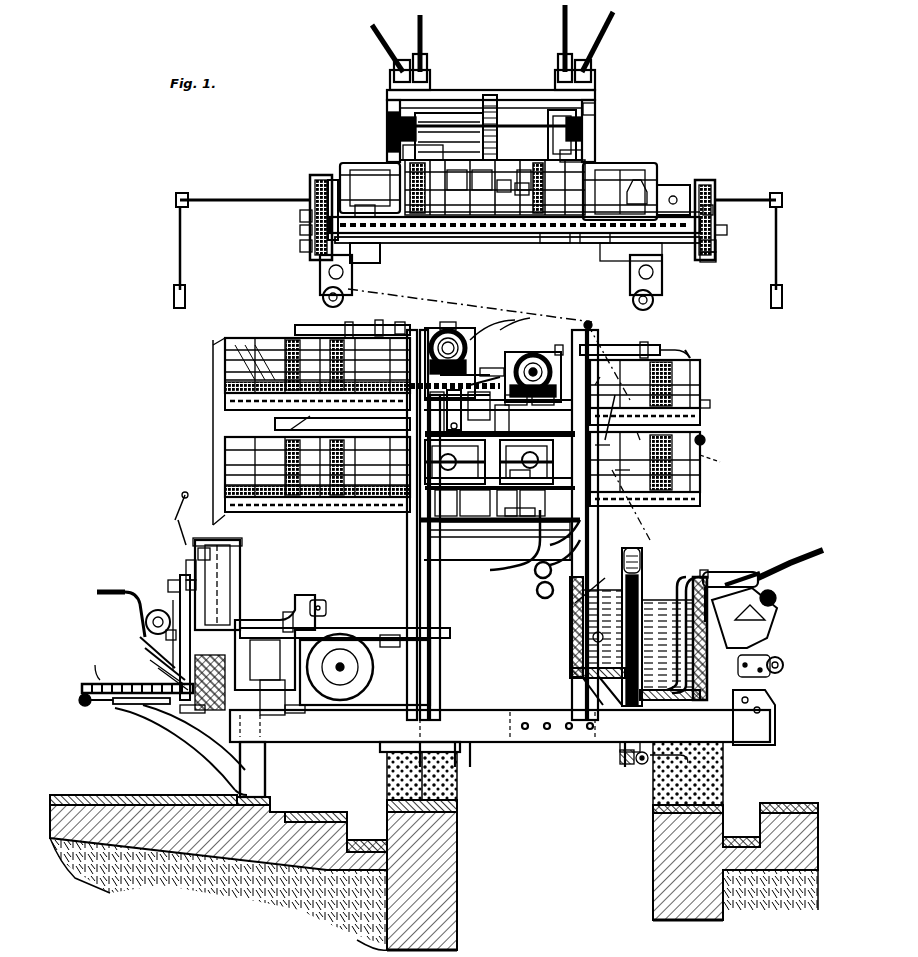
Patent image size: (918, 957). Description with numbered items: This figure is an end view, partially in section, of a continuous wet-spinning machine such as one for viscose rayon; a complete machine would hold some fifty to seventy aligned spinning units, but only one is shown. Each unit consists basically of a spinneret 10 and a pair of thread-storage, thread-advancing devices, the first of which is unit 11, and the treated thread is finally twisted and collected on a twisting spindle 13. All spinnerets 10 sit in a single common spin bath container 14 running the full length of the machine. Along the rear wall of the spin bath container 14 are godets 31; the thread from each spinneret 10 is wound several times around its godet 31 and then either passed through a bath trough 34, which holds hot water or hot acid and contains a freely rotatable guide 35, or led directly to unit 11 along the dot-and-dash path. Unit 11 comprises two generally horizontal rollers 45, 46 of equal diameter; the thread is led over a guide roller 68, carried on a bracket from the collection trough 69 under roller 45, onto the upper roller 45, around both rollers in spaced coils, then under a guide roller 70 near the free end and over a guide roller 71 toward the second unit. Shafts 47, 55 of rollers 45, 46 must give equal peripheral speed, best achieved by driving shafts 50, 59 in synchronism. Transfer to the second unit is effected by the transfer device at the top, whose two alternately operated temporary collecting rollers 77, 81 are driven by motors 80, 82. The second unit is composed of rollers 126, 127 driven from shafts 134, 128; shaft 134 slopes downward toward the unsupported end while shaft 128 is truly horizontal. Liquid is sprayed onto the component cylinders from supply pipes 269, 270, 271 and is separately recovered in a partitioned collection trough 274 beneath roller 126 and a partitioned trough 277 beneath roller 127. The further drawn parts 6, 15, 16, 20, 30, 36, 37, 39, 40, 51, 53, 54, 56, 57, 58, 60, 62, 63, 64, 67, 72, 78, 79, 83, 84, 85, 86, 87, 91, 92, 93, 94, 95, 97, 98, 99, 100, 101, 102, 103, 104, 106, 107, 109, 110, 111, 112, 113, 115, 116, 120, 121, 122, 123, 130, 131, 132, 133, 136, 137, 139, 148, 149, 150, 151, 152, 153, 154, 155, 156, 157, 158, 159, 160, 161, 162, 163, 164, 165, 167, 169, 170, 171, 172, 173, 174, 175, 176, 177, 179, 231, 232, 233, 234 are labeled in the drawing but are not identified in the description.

The rail bracket 6 is at (300, 230).
The spinneret 10 is at (665, 670).
The thread-storage, thread-advancing unit 11 is at (700, 368).
The twisting spindle 13 is at (178, 530).
The spin bath container 14 is at (745, 745).
The bracket 15 is at (772, 630).
The cylinder 16 is at (730, 572).
The roller bracket 20 is at (780, 672).
The roller 30 is at (640, 764).
The godet 31 is at (642, 560).
The bath trough 34 is at (593, 584).
The freely rotatable guide 35 is at (597, 637).
The bracket 36 is at (620, 748).
The bearing 37 is at (622, 764).
The support 39 is at (675, 763).
The box 40 is at (532, 502).
The upper roller 45 is at (700, 410).
The roller 46 is at (700, 478).
The shaft 47 is at (520, 473).
The shaft 50 is at (526, 462).
The bar 51 is at (520, 510).
The box 53 is at (507, 502).
The lever 54 is at (461, 400).
The shaft 55 is at (496, 364).
The block 56 is at (543, 398).
The block 57 is at (516, 398).
The arm 58 is at (486, 377).
The shaft 59 is at (533, 363).
The stop 60 is at (568, 350).
The gear housing 62 is at (525, 355).
The shaft 63 is at (540, 360).
The link 64 is at (612, 445).
The link 67 is at (604, 375).
The guide roller 68 is at (617, 409).
The collection trough 69 is at (710, 404).
The guide roller 70 is at (717, 457).
The guide roller 71 is at (592, 322).
The conveyor band 72 is at (700, 500).
The temporary collecting roller 77 is at (653, 300).
The post 78 is at (400, 322).
The knob 79 is at (705, 440).
The motor 80 is at (662, 280).
The temporary collecting roller 81 is at (323, 297).
The motor 82 is at (352, 280).
The bracket 83 is at (590, 243).
The rail beam 84 is at (448, 233).
The bracket 85 is at (713, 212).
The bearing block 86 is at (680, 185).
The hanger 87 is at (380, 253).
The bracket 91 is at (375, 240).
The lower bar 92 is at (500, 243).
The motor 93 is at (370, 188).
The plate 94 is at (332, 180).
The right plate 95 is at (715, 225).
The bracket 97 is at (300, 215).
The bracket 98 is at (300, 246).
The left plate 99 is at (310, 185).
The bracket 100 is at (716, 246).
The bracket 101 is at (716, 258).
The base 102 is at (403, 150).
The motor 103 is at (430, 113).
The bearing 104 is at (400, 132).
The end plate 106 is at (388, 125).
The bracket 107 is at (595, 110).
The member 109 is at (457, 177).
The member 110 is at (487, 178).
The rack 111 is at (490, 95).
The pulley 112 is at (565, 104).
The bracket 113 is at (582, 156).
The motor 115 is at (640, 165).
The member 116 is at (508, 185).
The hanger 120 is at (176, 198).
The shaft 121 is at (250, 200).
The member 122 is at (529, 187).
The member 123 is at (529, 176).
The roller 126 is at (275, 338).
The roller 127 is at (225, 335).
The shaft 128 is at (450, 503).
The gear 130 is at (465, 345).
The gear block 131 is at (456, 462).
The housing 132 is at (470, 522).
The box 133 is at (475, 503).
The shaft 134 is at (448, 322).
The cable 136 is at (518, 309).
The cable 137 is at (492, 314).
The pulley 139 is at (455, 340).
The bar 148 is at (370, 628).
The housing 149 is at (338, 640).
The wheel 150 is at (340, 667).
The block 151 is at (390, 635).
The bracket 152 is at (300, 605).
The housing 153 is at (275, 655).
The block 154 is at (210, 682).
The block 155 is at (200, 712).
The rod 156 is at (130, 704).
The knob 157 is at (85, 706).
The arm 158 is at (180, 735).
The rack 159 is at (82, 688).
The link 160 is at (85, 664).
The arm 161 is at (215, 770).
The block 162 is at (168, 586).
The link 163 is at (145, 648).
The block 164 is at (177, 639).
The link 165 is at (156, 671).
The block 167 is at (186, 585).
The link 169 is at (177, 504).
The cylinder 170 is at (240, 570).
The bracket 171 is at (180, 600).
The rod 172 is at (186, 570).
The block 173 is at (198, 553).
The lever 174 is at (140, 622).
The link 175 is at (140, 637).
The handle 176 is at (112, 590).
The link 177 is at (170, 677).
The pulley 179 is at (150, 612).
The bar 231 is at (625, 345).
The elbow 232 is at (688, 352).
The link 233 is at (628, 462).
The link 234 is at (644, 443).
The liquid supply pipe 269 is at (320, 325).
The liquid supply pipe 270 is at (379, 320).
The liquid supply pipe 271 is at (290, 418).
The collection trough 274 is at (365, 385).
The trough 277 is at (285, 512).